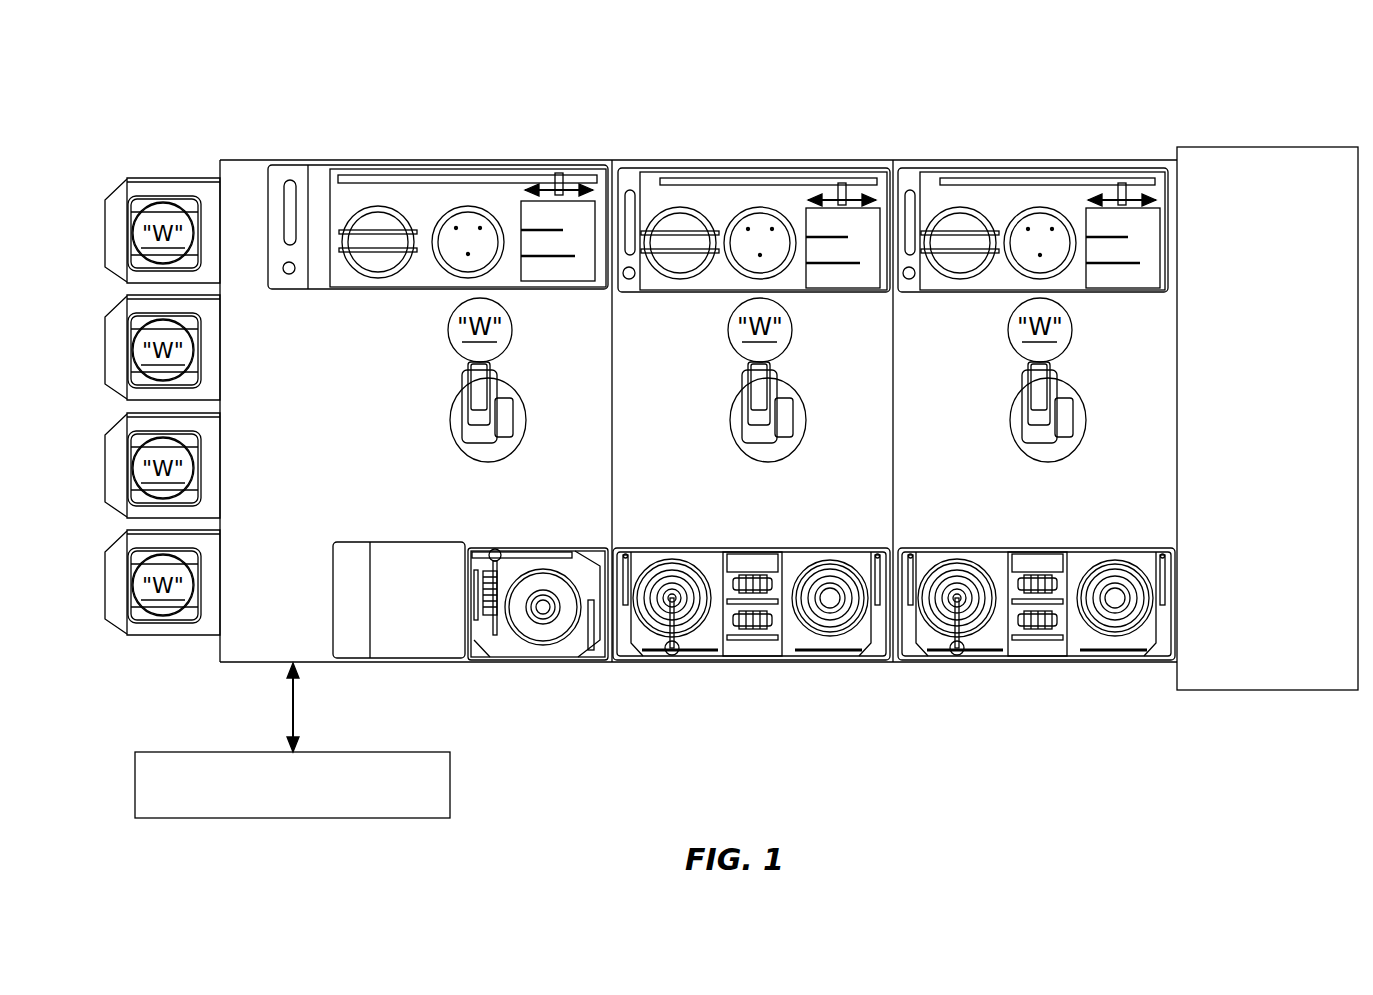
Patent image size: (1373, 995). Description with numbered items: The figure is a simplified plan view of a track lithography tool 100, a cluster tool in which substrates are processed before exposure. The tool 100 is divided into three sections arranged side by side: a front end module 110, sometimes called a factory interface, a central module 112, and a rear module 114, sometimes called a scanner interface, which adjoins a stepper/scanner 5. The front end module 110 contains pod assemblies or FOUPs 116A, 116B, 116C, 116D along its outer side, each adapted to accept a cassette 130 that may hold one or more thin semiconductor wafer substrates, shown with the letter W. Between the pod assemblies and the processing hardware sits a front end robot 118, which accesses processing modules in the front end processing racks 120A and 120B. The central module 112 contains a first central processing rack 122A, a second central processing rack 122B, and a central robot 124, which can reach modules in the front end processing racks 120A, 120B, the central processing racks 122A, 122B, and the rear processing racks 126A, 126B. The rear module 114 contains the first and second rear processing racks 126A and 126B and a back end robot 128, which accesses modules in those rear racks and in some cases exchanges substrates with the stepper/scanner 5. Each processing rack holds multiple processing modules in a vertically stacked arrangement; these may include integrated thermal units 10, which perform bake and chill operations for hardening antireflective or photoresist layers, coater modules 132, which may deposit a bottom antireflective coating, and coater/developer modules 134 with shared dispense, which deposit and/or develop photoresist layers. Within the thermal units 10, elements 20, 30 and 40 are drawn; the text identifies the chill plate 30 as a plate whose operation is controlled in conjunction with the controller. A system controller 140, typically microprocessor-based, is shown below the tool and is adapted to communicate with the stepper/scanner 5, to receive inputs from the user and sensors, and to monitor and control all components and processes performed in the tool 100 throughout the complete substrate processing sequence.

The track lithography tool 100 is at (192, 77).
The stepper/scanner 5 is at (1258, 147).
The integrated thermal unit 10 is at (293, 165).
The spin coating chamber 20 is at (378, 206).
The chill plate 30 is at (468, 206).
The thermal unit 40 is at (563, 289).
The front end module 110 is at (453, 692).
The central module 112 is at (698, 725).
The rear module 114 is at (1044, 742).
The pod assembly 116A is at (105, 230).
The pod assembly 116B is at (105, 347).
The pod assembly 116C is at (105, 465).
The pod assembly 116D is at (105, 582).
The cassette 130 is at (143, 197).
The front end robot 118 is at (462, 400).
The central robot 124 is at (742, 400).
The back end robot 128 is at (1022, 400).
The front end processing rack 120A is at (349, 289).
The first central processing rack 122A is at (690, 292).
The first rear processing rack 126A is at (970, 292).
The front end processing rack 120B is at (343, 542).
The second central processing rack 122B is at (680, 548).
The second rear processing rack 126B is at (975, 548).
The coater module 132 is at (505, 662).
The coater/developer module 134 is at (827, 662).
The system controller 140 is at (157, 752).